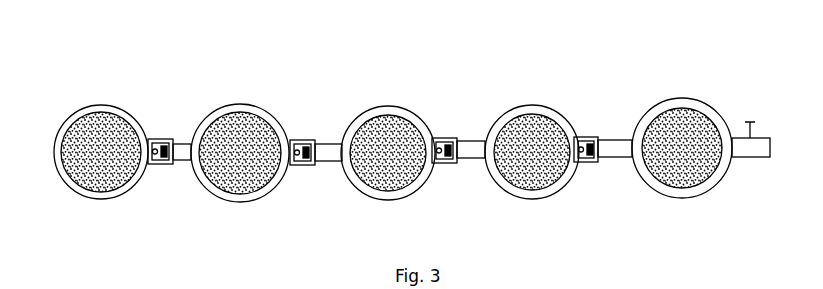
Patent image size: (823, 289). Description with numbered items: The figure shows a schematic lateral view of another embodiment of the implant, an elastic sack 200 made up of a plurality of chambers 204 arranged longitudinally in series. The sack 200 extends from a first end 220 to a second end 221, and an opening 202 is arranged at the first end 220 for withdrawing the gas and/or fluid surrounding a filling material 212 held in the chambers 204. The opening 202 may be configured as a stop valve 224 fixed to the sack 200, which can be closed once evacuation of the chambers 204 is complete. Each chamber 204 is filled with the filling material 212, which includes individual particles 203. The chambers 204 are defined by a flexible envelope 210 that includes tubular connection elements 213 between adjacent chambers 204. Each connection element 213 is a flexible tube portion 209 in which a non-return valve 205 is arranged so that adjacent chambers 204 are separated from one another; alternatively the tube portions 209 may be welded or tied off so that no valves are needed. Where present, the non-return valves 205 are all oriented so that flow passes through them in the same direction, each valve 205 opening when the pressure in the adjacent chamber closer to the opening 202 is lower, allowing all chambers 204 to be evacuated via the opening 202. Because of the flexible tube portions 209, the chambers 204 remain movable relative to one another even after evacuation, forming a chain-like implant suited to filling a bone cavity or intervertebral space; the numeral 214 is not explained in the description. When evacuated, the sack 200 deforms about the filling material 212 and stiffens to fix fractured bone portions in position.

The elastic sack 200 is at (128, 78).
The opening 202 is at (772, 140).
The individual particles 203 is at (213, 138).
The chambers 204 is at (248, 163).
The non-return valve 205 is at (447, 150).
The flexible tube portion 209 is at (611, 156).
The flexible envelope 210 is at (368, 194).
The filling material 212 is at (258, 136).
The tubular connection elements 213 is at (620, 169).
The base 214 is at (134, 284).
The first end 220 is at (729, 171).
The second end 221 is at (60, 154).
The stop valve 224 is at (770, 97).